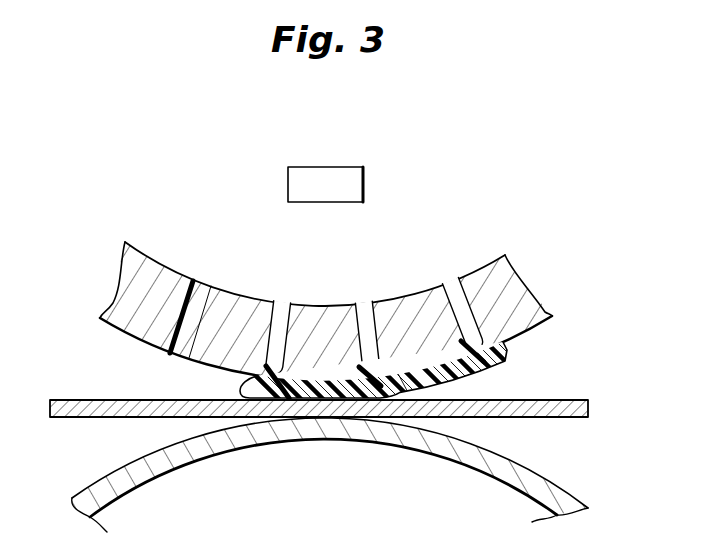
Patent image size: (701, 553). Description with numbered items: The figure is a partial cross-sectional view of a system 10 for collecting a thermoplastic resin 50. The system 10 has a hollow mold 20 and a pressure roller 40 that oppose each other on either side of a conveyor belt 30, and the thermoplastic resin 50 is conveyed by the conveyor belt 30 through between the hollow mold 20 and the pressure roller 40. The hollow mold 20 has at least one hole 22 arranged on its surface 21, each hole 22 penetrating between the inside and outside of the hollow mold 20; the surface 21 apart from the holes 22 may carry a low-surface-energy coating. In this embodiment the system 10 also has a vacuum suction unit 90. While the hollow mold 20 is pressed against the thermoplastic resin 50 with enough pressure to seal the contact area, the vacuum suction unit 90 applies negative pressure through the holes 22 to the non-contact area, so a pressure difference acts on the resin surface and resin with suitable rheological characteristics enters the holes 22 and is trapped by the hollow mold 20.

The system 10 is at (141, 156).
The hollow mold 20 is at (150, 281).
The surface 21 is at (100, 323).
The hole 22 is at (204, 290).
The conveyor belt 30 is at (96, 418).
The pressure roller 40 is at (552, 480).
The thermoplastic resin 50 is at (508, 355).
The vacuum suction unit 90 is at (366, 184).